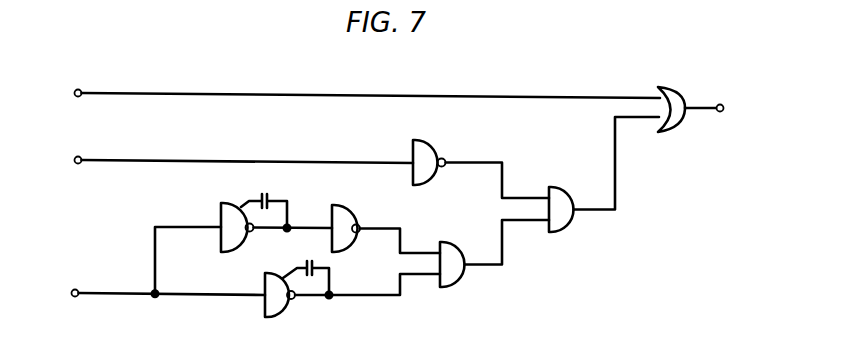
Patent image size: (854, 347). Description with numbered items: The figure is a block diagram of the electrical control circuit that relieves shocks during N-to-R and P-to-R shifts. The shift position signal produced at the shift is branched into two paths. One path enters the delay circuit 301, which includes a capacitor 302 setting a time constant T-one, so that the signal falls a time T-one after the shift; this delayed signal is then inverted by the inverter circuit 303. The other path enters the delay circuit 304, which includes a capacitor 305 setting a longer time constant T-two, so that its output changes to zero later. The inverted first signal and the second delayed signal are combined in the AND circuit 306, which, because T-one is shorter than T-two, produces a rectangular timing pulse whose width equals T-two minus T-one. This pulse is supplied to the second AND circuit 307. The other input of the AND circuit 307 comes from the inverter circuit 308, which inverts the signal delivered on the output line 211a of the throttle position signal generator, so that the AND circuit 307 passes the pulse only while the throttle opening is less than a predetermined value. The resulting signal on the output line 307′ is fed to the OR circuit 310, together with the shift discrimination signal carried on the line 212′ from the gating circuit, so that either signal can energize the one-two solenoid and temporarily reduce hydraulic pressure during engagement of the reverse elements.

The line 212′ is at (278, 93).
The output line of throttle position signal generator 211a is at (231, 161).
The delay circuit 301 is at (226, 204).
The capacitor 302 is at (266, 195).
The inverter circuit 303 is at (337, 207).
The delay circuit 304 is at (265, 283).
The capacitor 305 is at (310, 261).
The AND circuit 306 is at (460, 231).
The AND circuit 307 is at (552, 187).
The output line of AND circuit 307′ is at (615, 183).
The inverter circuit 308 is at (428, 144).
The OR circuit 310 is at (684, 96).